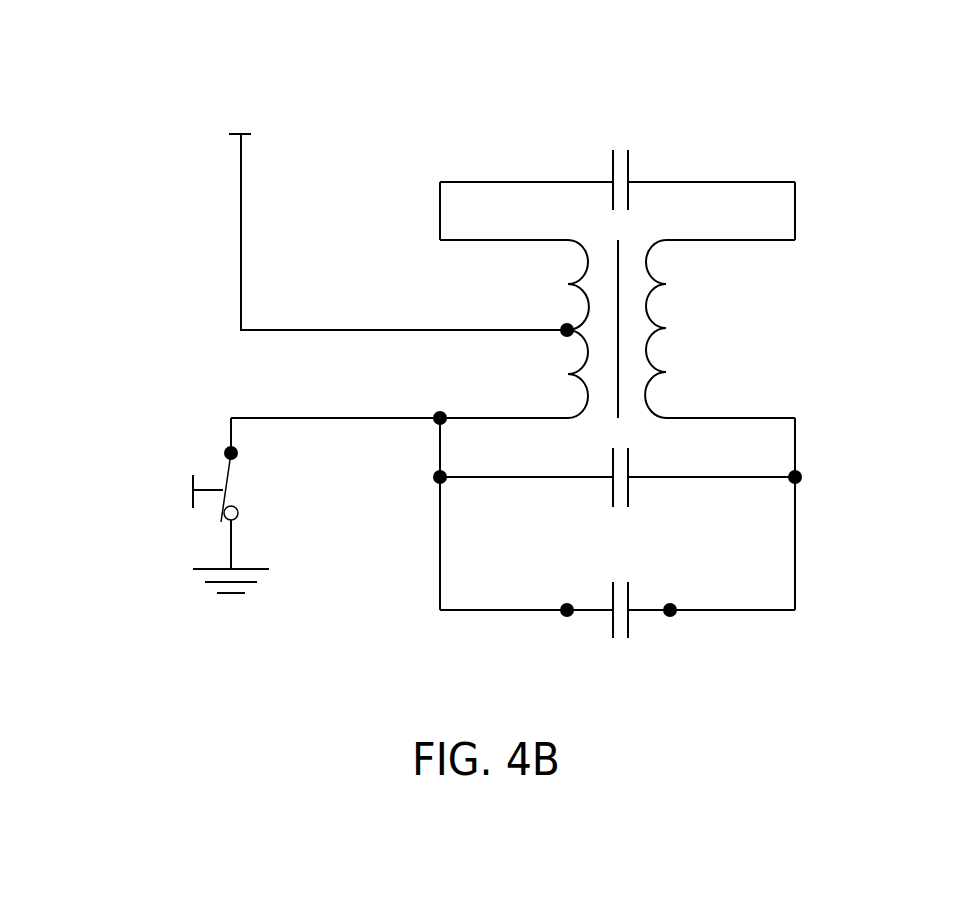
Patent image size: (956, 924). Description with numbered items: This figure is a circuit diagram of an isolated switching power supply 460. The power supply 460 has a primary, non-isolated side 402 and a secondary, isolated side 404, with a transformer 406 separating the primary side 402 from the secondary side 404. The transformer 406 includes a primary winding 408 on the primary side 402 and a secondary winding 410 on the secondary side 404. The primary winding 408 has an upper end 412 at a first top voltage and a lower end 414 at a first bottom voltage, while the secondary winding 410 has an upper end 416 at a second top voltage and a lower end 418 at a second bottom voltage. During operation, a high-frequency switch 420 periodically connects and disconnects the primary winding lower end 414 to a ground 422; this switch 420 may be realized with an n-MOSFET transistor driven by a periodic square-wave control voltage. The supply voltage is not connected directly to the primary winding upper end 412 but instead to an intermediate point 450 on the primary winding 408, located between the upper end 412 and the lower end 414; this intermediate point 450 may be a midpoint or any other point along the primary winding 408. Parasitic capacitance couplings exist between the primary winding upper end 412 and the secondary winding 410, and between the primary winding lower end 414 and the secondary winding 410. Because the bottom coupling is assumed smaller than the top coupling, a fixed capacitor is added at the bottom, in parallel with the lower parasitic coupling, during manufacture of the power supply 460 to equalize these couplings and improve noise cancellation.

The isolated switching power supply 460 is at (380, 57).
The primary, non-isolated side 402 is at (256, 366).
The secondary, isolated side 404 is at (781, 330).
The transformer 406 is at (583, 283).
The primary winding 408 is at (587, 304).
The secondary winding 410 is at (668, 283).
The primary winding upper end 412 is at (460, 240).
The primary winding lower end 414 is at (470, 420).
The secondary winding upper end 416 is at (690, 240).
The secondary winding lower end 418 is at (689, 420).
The high-frequency switch 420 is at (223, 470).
The ground 422 is at (252, 569).
The intermediate point 450 is at (566, 337).